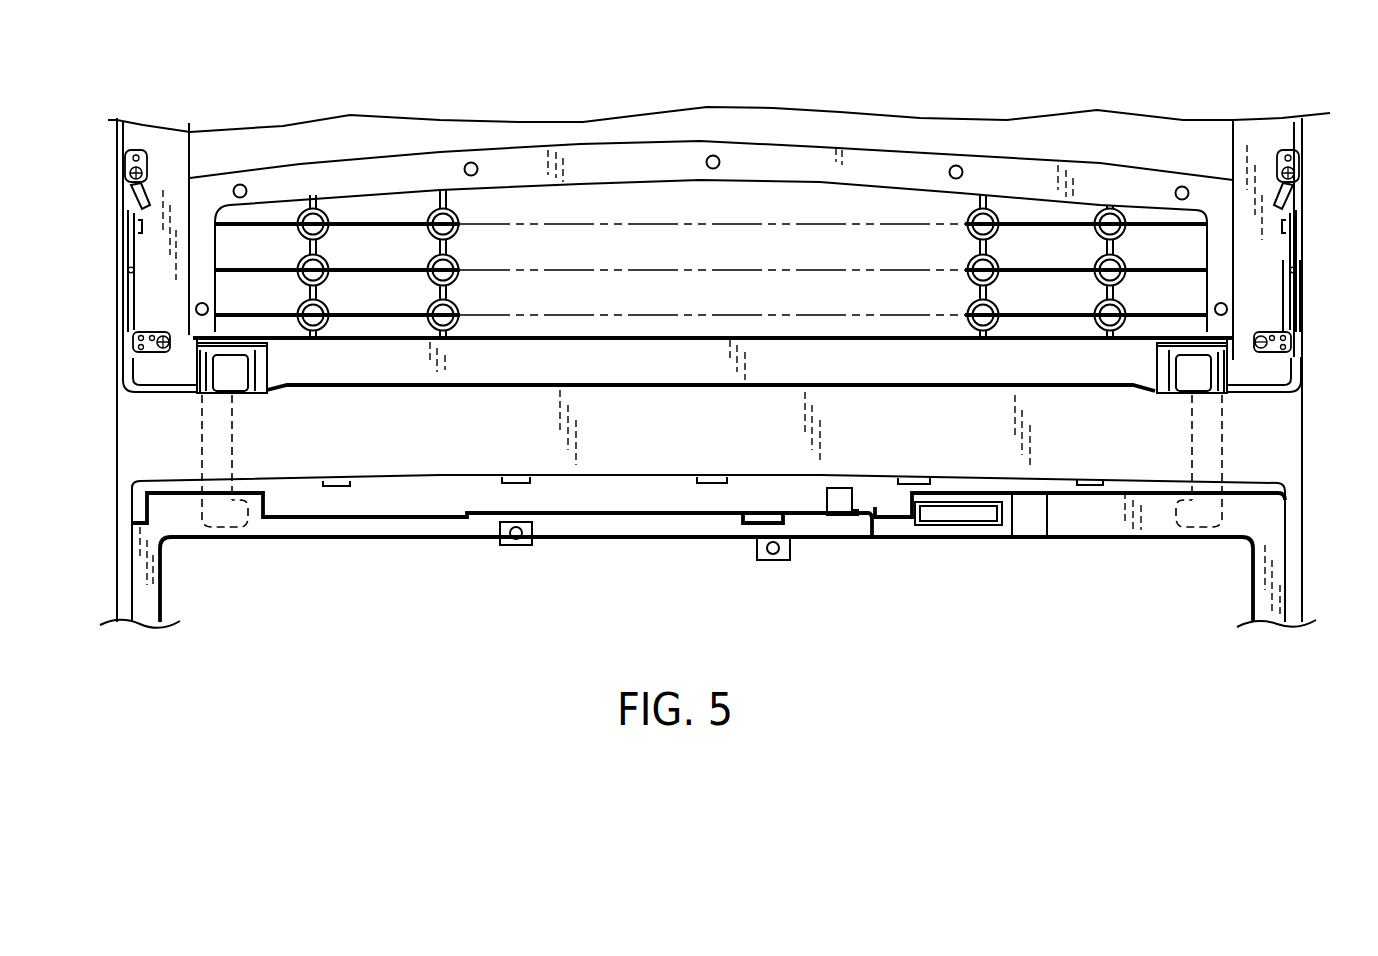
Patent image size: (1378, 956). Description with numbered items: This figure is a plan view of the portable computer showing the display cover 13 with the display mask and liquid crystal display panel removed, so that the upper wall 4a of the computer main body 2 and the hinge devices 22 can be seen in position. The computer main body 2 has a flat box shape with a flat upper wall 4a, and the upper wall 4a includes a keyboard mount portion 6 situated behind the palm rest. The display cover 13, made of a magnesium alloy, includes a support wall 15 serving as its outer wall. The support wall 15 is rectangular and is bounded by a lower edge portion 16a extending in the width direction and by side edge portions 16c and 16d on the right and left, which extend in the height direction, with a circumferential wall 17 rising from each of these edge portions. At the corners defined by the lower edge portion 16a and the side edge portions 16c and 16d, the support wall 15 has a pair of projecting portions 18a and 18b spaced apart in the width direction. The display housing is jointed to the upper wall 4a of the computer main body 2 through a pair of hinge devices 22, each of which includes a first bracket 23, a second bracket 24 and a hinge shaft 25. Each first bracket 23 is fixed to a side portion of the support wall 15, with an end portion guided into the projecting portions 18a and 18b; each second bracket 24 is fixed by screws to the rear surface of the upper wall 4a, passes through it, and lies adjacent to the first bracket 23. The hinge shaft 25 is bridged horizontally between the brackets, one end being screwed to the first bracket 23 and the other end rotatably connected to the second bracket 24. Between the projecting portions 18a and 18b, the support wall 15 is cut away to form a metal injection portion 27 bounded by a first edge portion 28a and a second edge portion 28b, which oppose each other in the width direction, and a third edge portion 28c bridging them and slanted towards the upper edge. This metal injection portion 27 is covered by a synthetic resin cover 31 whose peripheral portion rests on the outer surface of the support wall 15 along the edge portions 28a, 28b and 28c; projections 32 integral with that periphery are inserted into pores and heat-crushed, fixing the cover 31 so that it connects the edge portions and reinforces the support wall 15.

The computer main body 2 is at (1305, 580).
The upper wall 4a is at (637, 455).
The keyboard mount portion 6 is at (152, 592).
The display cover 13 is at (1306, 272).
The support wall 15 is at (1063, 132).
The lower edge portion 16a is at (1230, 333).
The side edge portion 16c is at (125, 140).
The side edge portion 16d is at (1283, 134).
The circumferential wall 17 is at (125, 206).
The projecting portion 18a is at (125, 362).
The projecting portion 18b is at (1300, 363).
The hinge device 22 is at (172, 372).
The first bracket 23 is at (130, 303).
The second bracket 24 is at (218, 455).
The hinge shaft 25 is at (220, 394).
The metal injection portion 27 is at (765, 187).
The first edge portion 28a is at (232, 228).
The second edge portion 28b is at (1175, 240).
The third edge portion 28c is at (633, 177).
The cover 31 is at (1025, 303).
The projections 32 is at (471, 162).